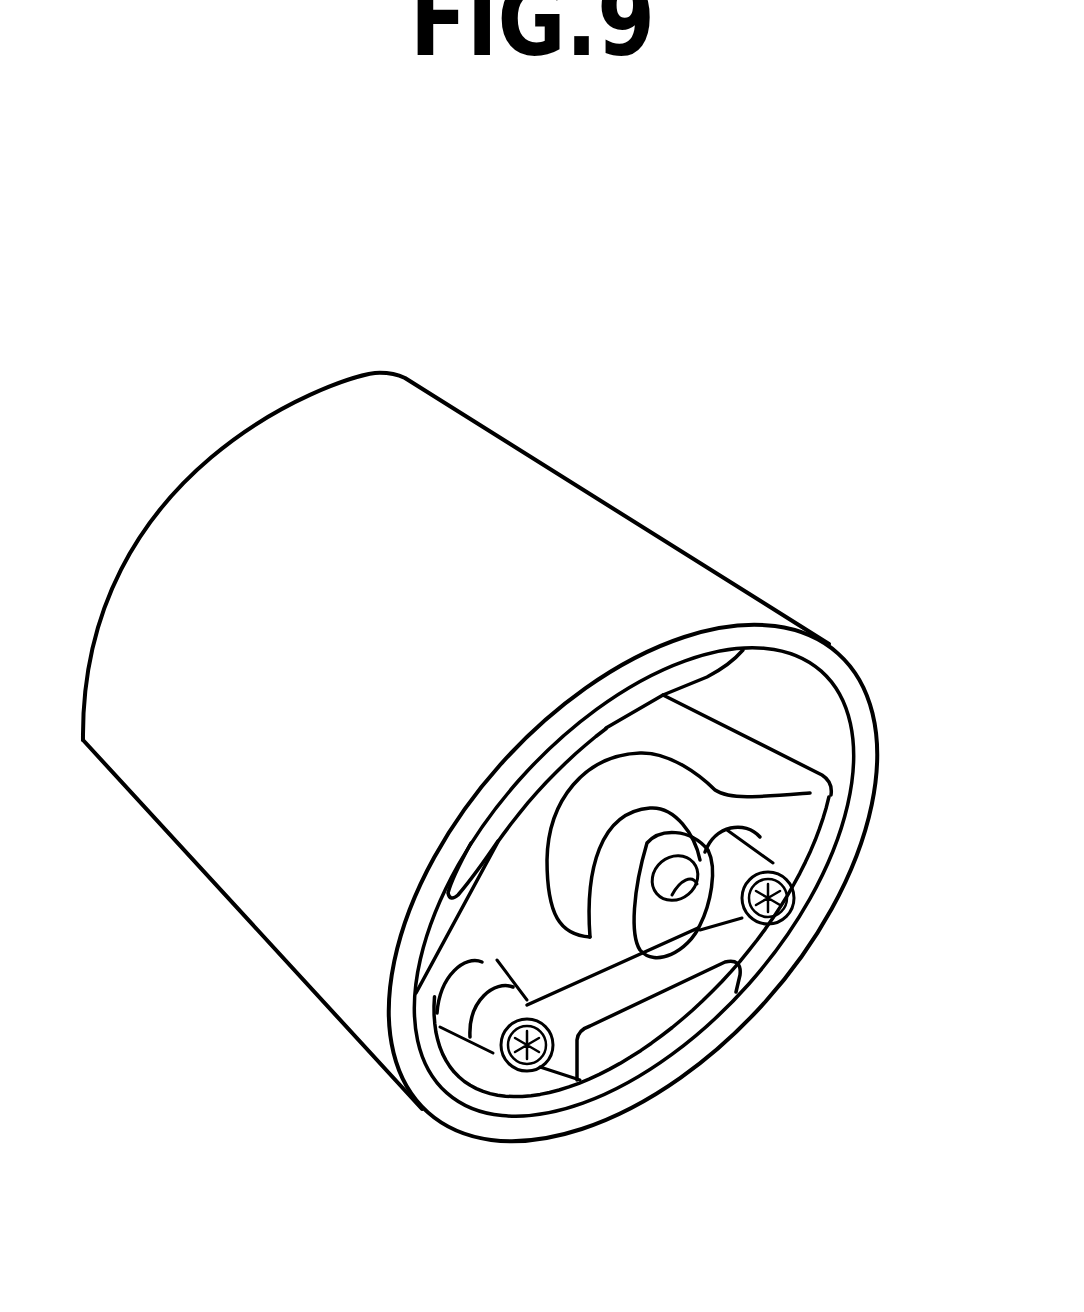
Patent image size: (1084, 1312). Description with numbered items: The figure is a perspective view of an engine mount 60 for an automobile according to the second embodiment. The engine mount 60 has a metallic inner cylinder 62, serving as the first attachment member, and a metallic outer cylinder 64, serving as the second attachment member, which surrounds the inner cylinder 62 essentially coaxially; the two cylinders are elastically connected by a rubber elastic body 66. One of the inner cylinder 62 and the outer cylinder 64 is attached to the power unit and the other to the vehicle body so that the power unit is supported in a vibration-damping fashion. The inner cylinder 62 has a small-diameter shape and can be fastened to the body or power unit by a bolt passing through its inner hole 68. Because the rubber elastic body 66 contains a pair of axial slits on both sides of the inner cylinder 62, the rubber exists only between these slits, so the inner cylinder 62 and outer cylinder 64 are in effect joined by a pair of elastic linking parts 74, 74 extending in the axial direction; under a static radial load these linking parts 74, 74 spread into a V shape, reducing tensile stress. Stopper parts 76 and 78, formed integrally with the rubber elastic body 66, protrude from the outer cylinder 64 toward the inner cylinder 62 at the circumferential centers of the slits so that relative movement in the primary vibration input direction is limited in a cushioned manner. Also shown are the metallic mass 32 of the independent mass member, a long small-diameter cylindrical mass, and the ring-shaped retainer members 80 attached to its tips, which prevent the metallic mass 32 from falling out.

The engine mount 60 is at (509, 736).
The outer cylinder 64 is at (240, 782).
The rubber elastic body 66 is at (574, 755).
The stopper part 76 is at (653, 688).
The elastic linking part 74 is at (757, 813).
The inner cylinder 62 is at (703, 784).
The inner hole 68 is at (688, 900).
The stopper part 78 is at (667, 1013).
The retainer member 80 is at (779, 875).
The metallic mass 32 is at (793, 918).